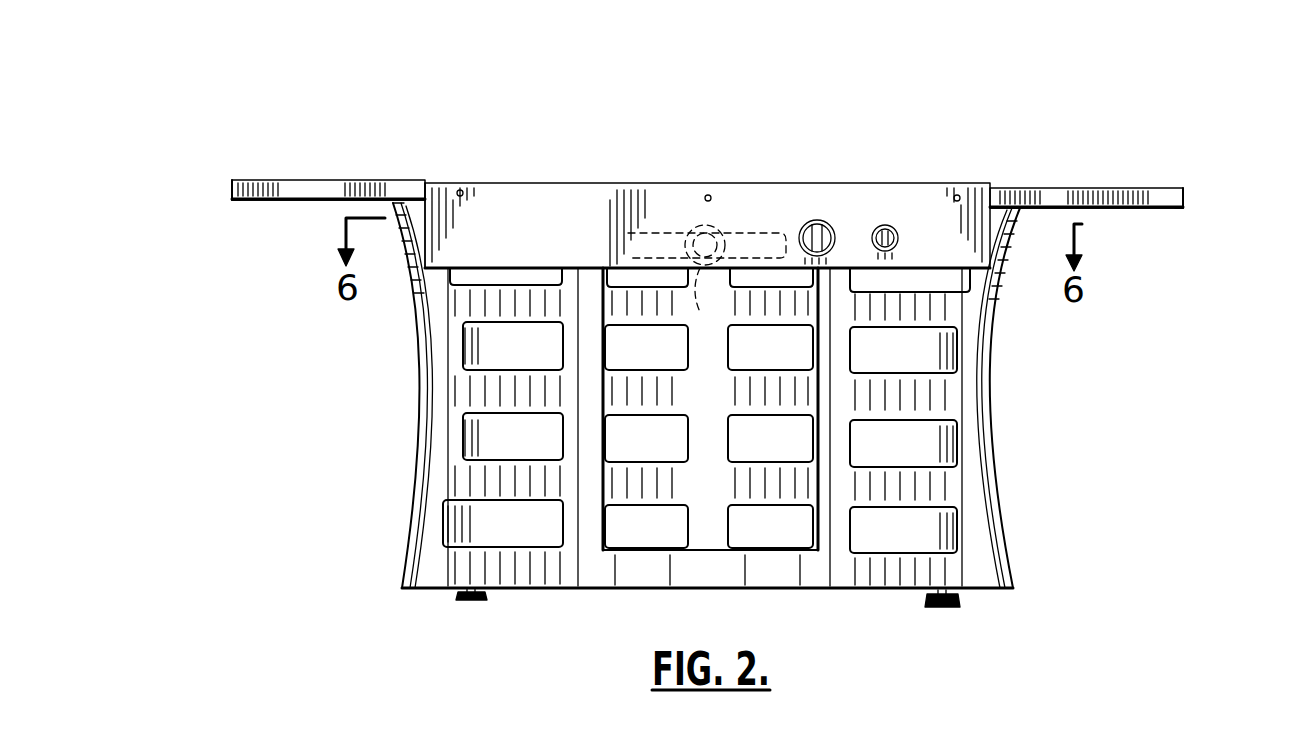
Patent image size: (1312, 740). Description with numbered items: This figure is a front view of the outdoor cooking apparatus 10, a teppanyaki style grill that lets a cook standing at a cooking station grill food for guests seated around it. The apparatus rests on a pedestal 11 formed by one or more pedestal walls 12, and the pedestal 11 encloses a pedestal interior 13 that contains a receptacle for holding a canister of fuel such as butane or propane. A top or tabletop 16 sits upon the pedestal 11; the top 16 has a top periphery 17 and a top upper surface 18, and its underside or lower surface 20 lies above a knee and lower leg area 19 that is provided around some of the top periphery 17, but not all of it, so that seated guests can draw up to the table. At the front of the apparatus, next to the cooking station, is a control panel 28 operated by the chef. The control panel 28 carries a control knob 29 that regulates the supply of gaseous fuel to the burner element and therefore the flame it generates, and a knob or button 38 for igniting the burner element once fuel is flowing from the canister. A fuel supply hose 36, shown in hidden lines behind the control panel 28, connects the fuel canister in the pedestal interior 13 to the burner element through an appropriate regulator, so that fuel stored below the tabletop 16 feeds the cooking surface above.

The outdoor cooking apparatus 10 is at (940, 84).
The pedestal 11 is at (418, 468).
The pedestal walls 12 is at (425, 376).
The pedestal interior 13 is at (660, 526).
The top 16 is at (313, 188).
The top periphery 17 is at (233, 190).
The top upper surface 18 is at (447, 183).
The knee and lower leg area 19 is at (264, 293).
The underside 20 is at (290, 205).
The control panel 28 is at (546, 237).
The control knob 29 is at (812, 220).
The fuel supply hose 36 is at (722, 290).
The knob or button 38 is at (892, 225).